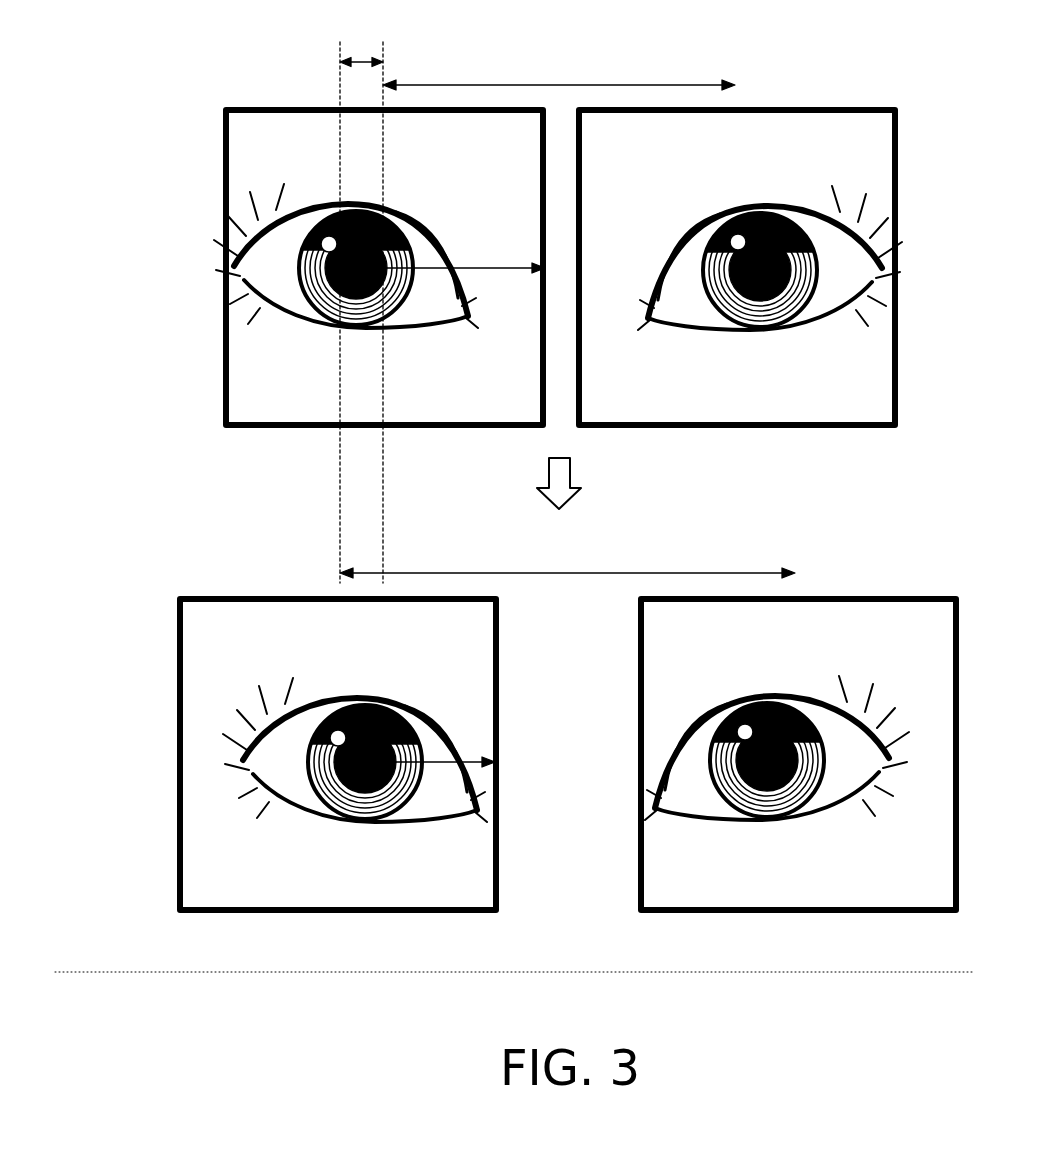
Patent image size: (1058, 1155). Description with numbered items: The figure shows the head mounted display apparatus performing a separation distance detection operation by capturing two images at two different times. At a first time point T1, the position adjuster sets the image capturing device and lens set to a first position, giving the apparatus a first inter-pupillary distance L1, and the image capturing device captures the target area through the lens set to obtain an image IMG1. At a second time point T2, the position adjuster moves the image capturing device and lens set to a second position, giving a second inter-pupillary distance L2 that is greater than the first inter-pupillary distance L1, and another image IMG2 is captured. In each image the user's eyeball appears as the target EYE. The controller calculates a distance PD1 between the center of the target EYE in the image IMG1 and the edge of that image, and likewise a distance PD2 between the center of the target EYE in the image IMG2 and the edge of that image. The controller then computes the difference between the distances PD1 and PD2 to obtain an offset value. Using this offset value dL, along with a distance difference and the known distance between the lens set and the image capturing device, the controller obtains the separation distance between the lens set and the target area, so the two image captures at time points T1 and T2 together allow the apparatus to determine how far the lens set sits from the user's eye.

The image IMG1 is at (277, 107).
The image IMG2 is at (245, 597).
The target EYE is at (292, 312).
The distance PD1 is at (453, 252).
The distance PD2 is at (477, 756).
The first time point T1 is at (152, 267).
The second time point T2 is at (142, 765).
The first inter-pupillary distance L1 is at (559, 69).
The second inter-pupillary distance L2 is at (567, 559).
The offset value dL is at (361, 300).